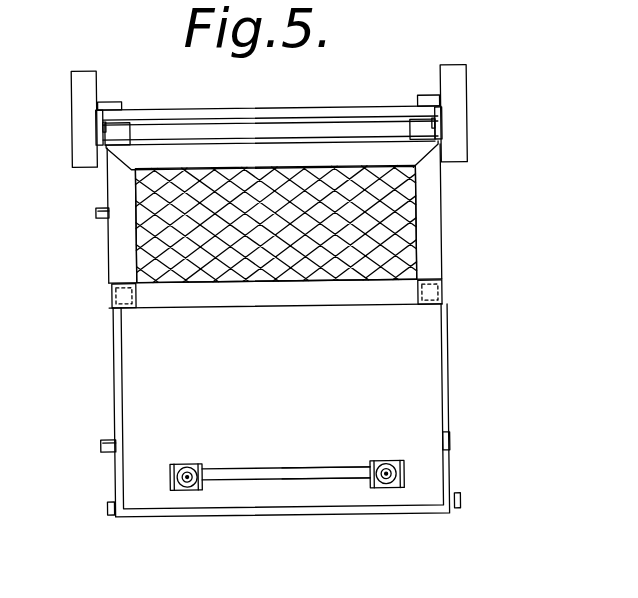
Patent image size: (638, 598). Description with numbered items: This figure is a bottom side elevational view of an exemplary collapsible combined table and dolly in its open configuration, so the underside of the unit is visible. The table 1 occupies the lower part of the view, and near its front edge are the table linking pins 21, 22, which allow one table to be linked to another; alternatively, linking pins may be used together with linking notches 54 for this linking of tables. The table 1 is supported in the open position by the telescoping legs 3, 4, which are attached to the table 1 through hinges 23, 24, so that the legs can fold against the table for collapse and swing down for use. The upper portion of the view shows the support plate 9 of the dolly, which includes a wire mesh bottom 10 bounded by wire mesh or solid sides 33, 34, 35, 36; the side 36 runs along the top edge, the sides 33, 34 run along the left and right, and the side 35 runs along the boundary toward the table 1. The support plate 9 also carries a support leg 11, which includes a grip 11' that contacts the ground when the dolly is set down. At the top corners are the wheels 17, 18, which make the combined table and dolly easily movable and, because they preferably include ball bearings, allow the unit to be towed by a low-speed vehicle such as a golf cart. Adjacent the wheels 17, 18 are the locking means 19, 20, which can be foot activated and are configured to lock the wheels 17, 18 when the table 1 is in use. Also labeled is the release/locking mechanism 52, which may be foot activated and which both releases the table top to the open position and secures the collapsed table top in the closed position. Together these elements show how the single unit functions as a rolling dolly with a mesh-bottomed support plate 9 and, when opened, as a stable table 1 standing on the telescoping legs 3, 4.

The table 1 is at (215, 501).
The telescoping leg 3 is at (190, 486).
The telescoping leg 4 is at (390, 486).
The support plate 9 is at (203, 311).
The wire mesh bottom 10 is at (378, 209).
The support leg 11 is at (87, 319).
The grip 11' is at (474, 284).
The wheel 17 is at (93, 81).
The wheel 18 is at (461, 85).
The locking means 19 is at (117, 98).
The locking means 20 is at (432, 99).
The table linking pin 21 is at (104, 516).
The table linking pin 22 is at (455, 507).
The hinge 23 is at (166, 484).
The hinge 24 is at (403, 482).
The side 33 is at (110, 260).
The side 34 is at (444, 224).
The side 35 is at (325, 313).
The side 36 is at (190, 143).
The release/locking mechanism 52 is at (268, 96).
The linking notch 54 is at (446, 442).